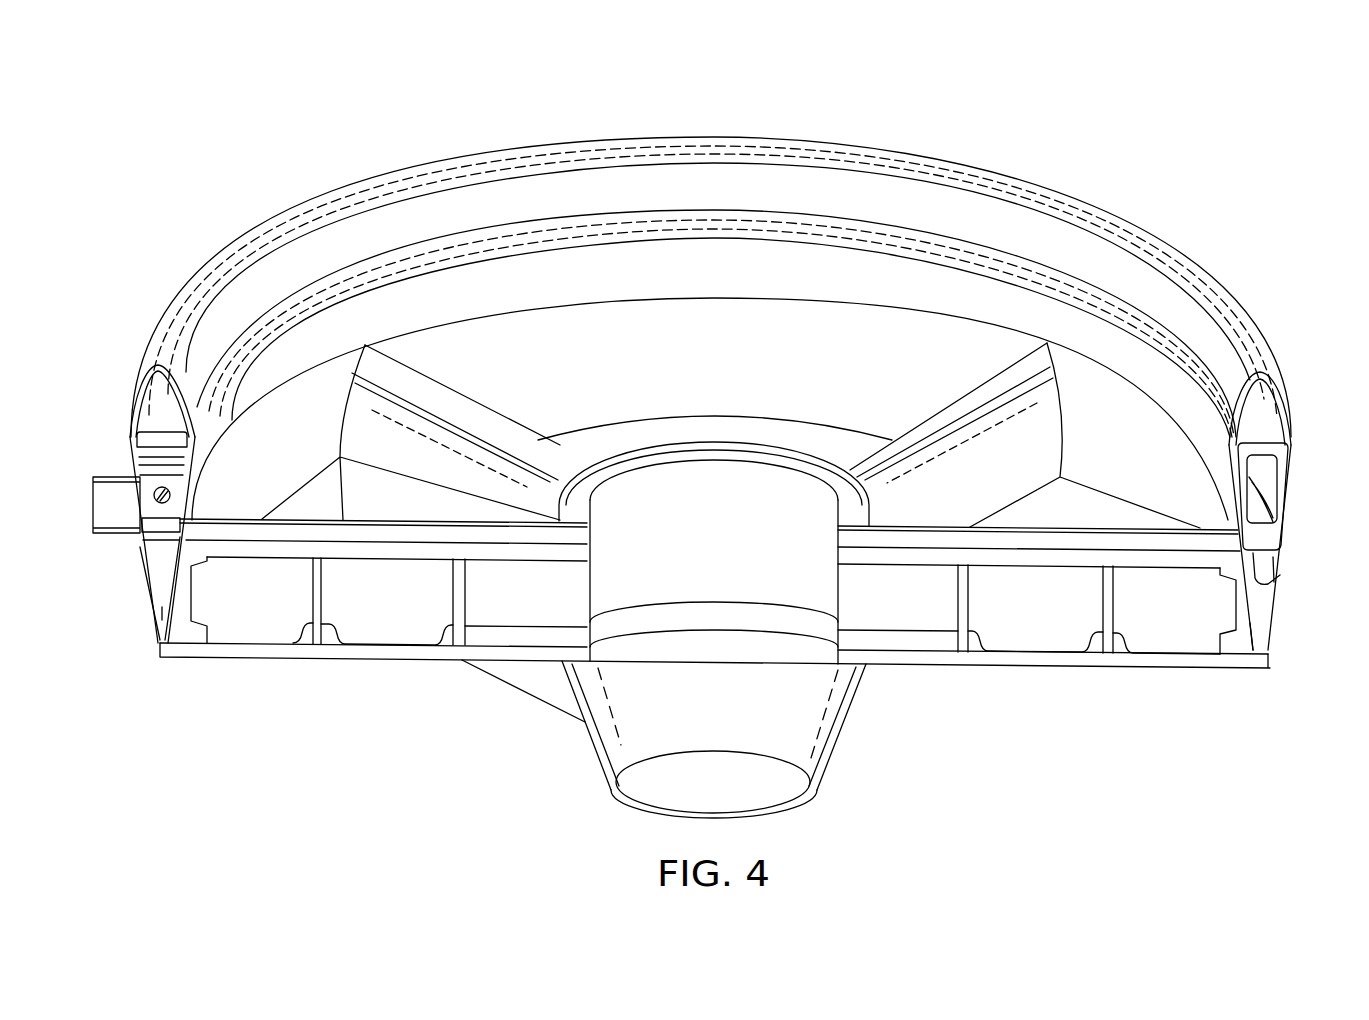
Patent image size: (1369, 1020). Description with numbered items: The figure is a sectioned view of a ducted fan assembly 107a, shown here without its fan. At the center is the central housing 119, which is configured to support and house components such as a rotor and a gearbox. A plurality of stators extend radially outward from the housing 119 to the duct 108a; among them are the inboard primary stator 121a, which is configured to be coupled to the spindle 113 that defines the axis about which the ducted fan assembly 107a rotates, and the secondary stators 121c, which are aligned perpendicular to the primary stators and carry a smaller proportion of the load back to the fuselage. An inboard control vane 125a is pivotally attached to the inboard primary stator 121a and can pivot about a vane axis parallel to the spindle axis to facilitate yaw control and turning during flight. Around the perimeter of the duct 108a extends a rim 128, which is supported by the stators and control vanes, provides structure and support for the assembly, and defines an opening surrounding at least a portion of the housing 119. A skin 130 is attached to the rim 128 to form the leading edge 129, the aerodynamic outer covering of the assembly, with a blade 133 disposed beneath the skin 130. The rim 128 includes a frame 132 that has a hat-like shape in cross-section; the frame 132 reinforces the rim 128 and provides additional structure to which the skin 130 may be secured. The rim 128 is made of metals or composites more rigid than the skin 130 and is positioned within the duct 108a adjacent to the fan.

The ducted fan assembly 107a is at (168, 117).
The leading edge 129 is at (1022, 190).
The skin 130 is at (1182, 229).
The duct 108a is at (128, 410).
The spindle 113 is at (122, 477).
The inboard primary stator 121a is at (510, 383).
The secondary stator 121c is at (260, 657).
The inboard control vane 125a is at (522, 690).
The central housing 119 is at (834, 720).
The blade 133 is at (1271, 393).
The rim 128 is at (1276, 518).
The frame 132 is at (1258, 557).